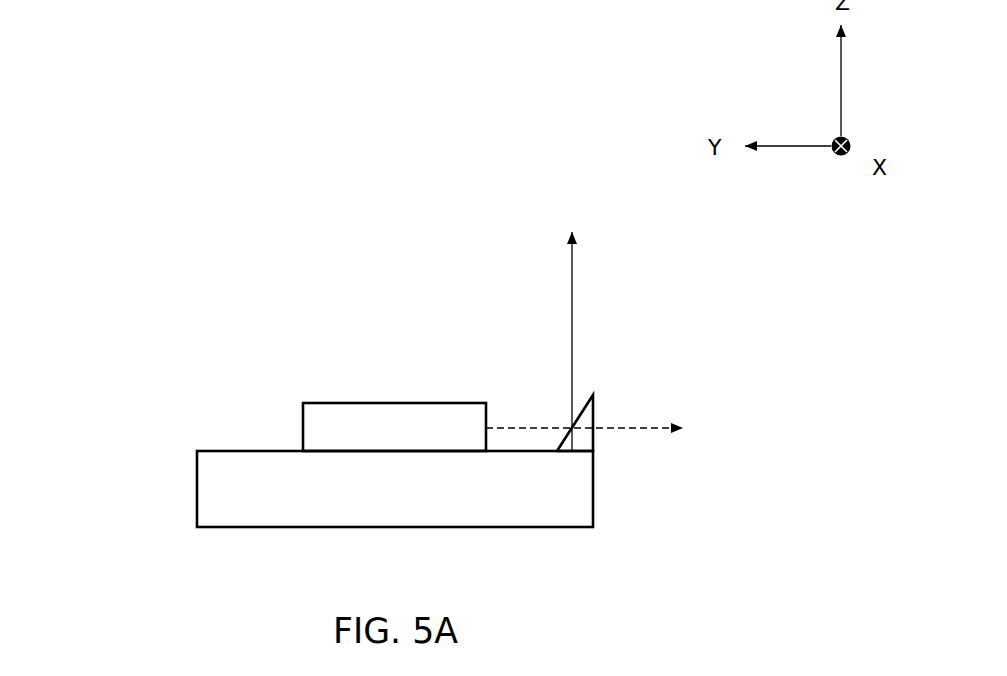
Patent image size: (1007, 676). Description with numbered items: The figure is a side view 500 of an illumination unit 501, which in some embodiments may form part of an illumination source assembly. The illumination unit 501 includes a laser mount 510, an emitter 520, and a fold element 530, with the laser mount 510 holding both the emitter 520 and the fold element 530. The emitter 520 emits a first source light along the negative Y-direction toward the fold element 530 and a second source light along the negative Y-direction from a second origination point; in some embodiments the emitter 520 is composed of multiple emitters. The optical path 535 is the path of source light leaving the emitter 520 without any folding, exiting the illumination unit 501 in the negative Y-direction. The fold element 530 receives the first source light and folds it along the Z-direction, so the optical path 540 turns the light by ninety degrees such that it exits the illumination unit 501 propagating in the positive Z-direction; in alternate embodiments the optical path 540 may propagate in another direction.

The side view 500 is at (32, 64).
The illumination unit 501 is at (89, 195).
The laser mount 510 is at (197, 483).
The emitter 520 is at (395, 403).
The fold element 530 is at (593, 451).
The optical path 535 is at (647, 428).
The optical path 540 is at (653, 327).